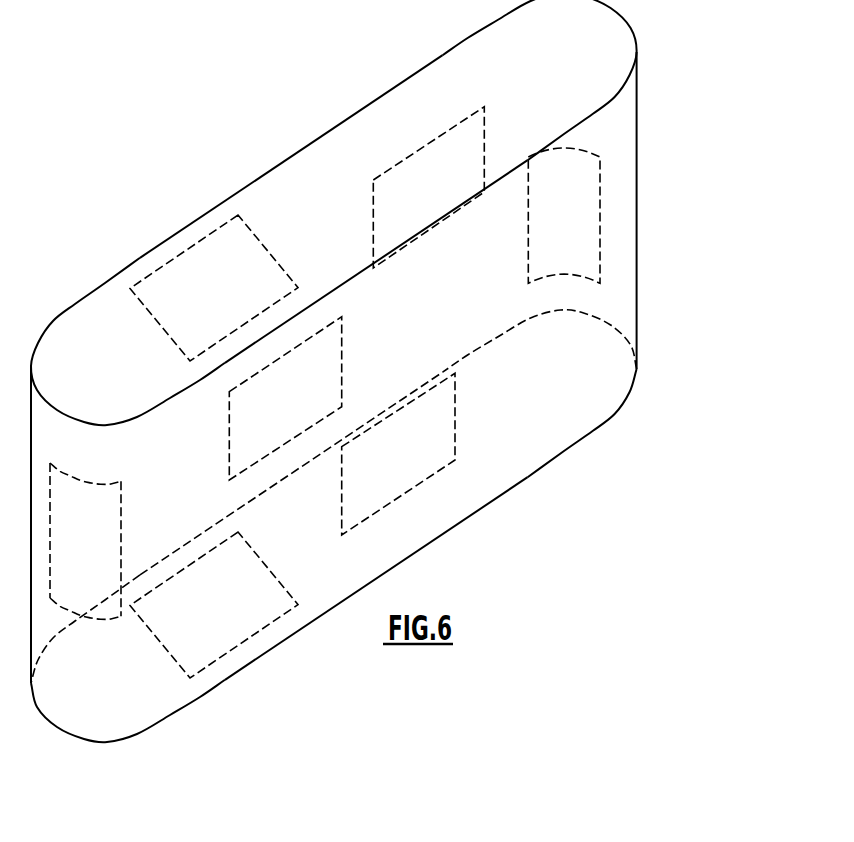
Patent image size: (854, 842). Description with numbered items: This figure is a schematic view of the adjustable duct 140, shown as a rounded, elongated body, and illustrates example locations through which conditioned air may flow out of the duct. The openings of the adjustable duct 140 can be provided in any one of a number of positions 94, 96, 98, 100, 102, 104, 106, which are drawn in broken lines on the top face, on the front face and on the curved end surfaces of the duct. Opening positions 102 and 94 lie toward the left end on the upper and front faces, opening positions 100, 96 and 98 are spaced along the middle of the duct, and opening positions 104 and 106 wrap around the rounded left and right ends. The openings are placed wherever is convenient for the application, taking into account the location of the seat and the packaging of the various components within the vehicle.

The adjustable duct 140 is at (229, 161).
The opening position 94 is at (228, 652).
The opening position 96 is at (342, 366).
The opening position 98 is at (455, 425).
The opening position 100 is at (373, 197).
The opening position 102 is at (148, 310).
The opening position 104 is at (121, 533).
The opening position 106 is at (528, 225).